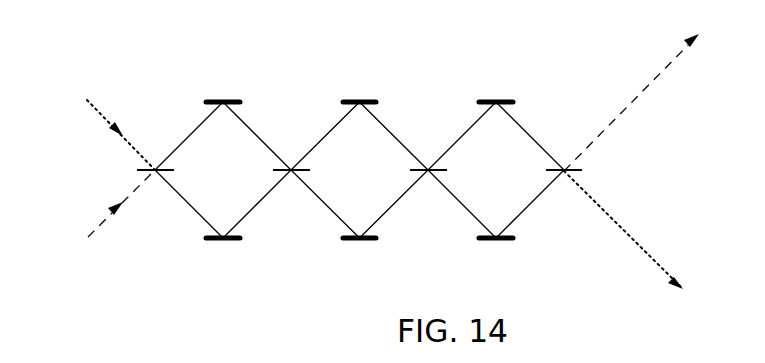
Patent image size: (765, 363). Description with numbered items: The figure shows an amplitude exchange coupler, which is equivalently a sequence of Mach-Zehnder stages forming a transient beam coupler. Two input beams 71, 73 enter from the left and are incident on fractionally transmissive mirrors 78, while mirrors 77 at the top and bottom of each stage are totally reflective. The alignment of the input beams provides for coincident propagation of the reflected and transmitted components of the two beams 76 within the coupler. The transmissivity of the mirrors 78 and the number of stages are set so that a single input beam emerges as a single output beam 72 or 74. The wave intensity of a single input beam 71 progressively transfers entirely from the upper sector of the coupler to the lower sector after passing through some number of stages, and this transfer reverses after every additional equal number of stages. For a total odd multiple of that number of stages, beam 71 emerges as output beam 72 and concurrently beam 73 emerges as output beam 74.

The input beam 71 is at (95, 110).
The output beam 72 is at (618, 228).
The input beam 73 is at (101, 222).
The output beam 74 is at (638, 93).
The reflected and transmitted components of the two beams 76 is at (258, 138).
The totally reflective mirrors 77 is at (350, 100).
The fractionally transmissive mirrors 78 is at (578, 168).